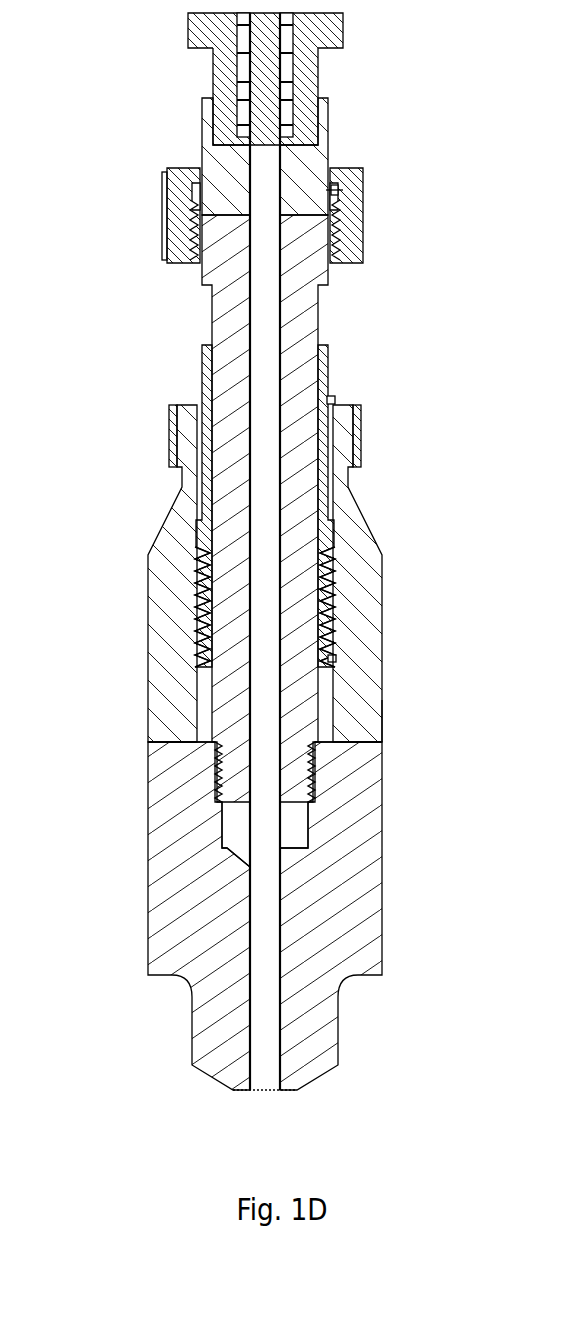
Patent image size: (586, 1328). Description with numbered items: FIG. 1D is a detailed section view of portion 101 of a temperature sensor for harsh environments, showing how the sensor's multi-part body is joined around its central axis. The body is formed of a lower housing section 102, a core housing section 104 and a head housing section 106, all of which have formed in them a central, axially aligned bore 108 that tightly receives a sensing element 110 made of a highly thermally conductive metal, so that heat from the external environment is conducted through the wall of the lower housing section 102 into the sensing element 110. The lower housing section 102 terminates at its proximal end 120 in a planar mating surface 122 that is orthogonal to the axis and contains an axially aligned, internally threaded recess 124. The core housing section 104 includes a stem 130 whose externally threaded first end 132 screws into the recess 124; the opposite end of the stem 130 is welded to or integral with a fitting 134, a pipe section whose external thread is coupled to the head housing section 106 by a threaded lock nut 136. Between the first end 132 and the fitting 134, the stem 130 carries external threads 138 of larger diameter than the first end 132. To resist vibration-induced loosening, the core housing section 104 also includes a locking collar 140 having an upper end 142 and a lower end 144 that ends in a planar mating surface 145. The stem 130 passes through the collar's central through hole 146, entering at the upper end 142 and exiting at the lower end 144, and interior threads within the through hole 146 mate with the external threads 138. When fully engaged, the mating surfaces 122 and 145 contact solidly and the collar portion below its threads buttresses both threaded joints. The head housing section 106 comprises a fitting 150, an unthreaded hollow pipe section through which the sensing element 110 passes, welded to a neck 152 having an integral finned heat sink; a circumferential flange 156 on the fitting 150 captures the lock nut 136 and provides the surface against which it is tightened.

The portion 101 is at (143, 103).
The lower housing section 102 is at (340, 1030).
The core housing section 104 is at (107, 740).
The head housing section 106 is at (330, 115).
The bore 108 is at (250, 1070).
The sensing element 110 is at (262, 985).
The proximal end 120 is at (148, 750).
The planar mating surface 122 is at (180, 735).
The axially aligned recess 124 is at (213, 787).
The stem 130 is at (205, 390).
The first end 132 is at (300, 790).
The fitting 134 is at (333, 288).
The lock nut 136 is at (162, 213).
The external threads 138 is at (326, 632).
The locking collar 140 is at (385, 600).
The upper end 142 is at (366, 418).
The lower end 144 is at (385, 725).
The planar mating surface 145 is at (369, 745).
The through hole 146 is at (333, 398).
The fitting 150 is at (200, 150).
The neck 152 is at (343, 31).
The circumferential flange 156 is at (343, 190).